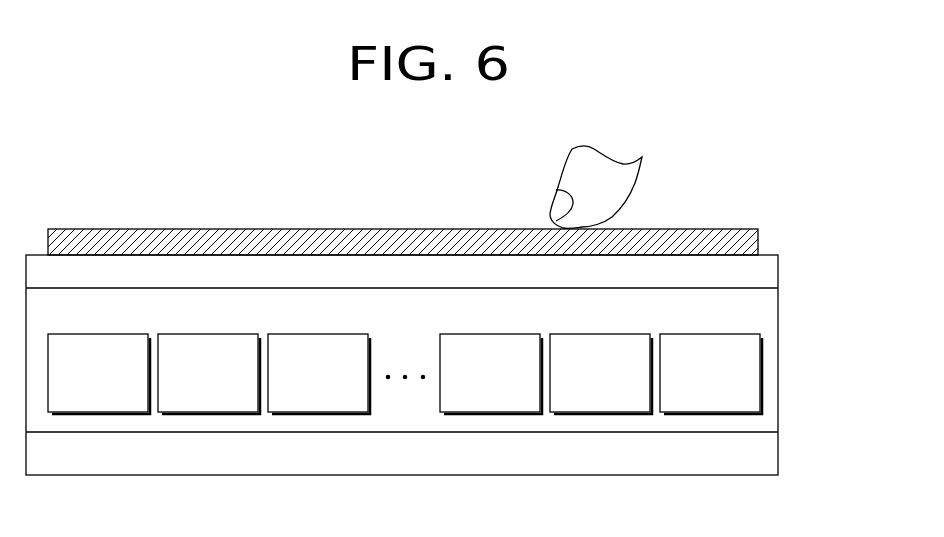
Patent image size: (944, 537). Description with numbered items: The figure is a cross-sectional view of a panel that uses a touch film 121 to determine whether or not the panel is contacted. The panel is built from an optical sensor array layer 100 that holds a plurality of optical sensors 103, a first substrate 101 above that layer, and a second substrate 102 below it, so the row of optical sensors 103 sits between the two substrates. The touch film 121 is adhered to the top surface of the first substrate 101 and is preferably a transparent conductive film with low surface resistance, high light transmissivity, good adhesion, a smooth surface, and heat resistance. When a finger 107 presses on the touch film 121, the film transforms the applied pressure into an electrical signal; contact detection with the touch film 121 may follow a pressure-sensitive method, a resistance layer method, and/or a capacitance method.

The optical sensor array layer 100 is at (436, 365).
The first substrate 101 is at (768, 272).
The second substrate 102 is at (768, 447).
The optical sensor 103 is at (707, 332).
The finger 107 is at (621, 184).
The touch film 121 is at (758, 240).